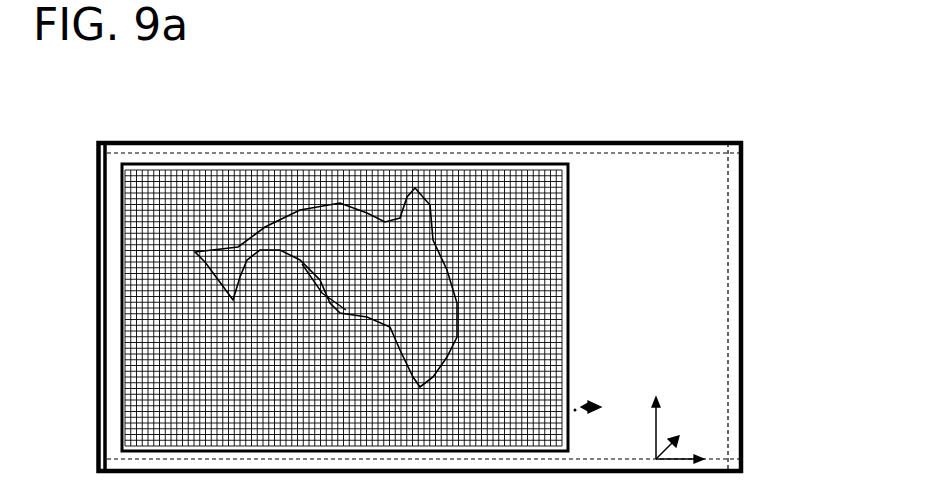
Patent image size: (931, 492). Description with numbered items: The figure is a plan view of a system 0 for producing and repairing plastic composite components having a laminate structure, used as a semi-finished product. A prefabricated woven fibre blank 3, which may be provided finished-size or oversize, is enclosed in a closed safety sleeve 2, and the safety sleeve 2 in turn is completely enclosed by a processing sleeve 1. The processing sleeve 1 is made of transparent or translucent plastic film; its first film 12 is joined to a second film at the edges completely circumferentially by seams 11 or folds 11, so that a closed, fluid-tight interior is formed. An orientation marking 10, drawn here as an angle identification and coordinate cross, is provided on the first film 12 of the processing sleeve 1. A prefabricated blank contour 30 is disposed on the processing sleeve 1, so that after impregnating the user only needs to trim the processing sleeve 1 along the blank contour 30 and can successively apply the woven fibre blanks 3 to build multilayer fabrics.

The system 0 is at (615, 122).
The processing sleeve 1 is at (708, 140).
The safety sleeve 2 is at (569, 235).
The woven fibre blank 3 is at (243, 340).
The orientation marking 10 is at (598, 404).
The seam 11 is at (235, 153).
The first film 12 is at (664, 312).
The blank contour 30 is at (222, 266).